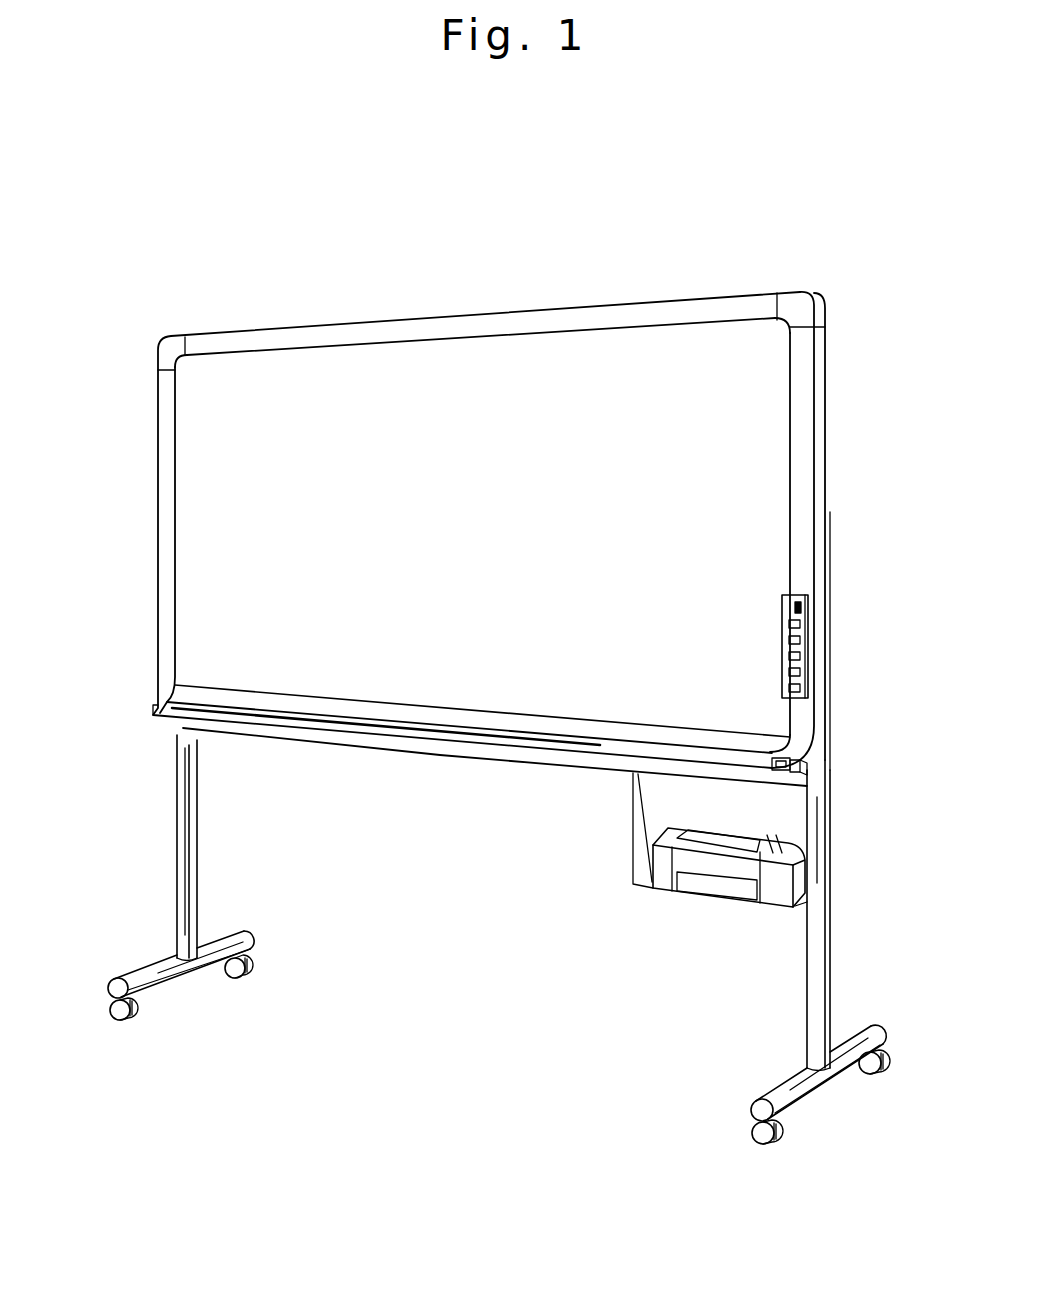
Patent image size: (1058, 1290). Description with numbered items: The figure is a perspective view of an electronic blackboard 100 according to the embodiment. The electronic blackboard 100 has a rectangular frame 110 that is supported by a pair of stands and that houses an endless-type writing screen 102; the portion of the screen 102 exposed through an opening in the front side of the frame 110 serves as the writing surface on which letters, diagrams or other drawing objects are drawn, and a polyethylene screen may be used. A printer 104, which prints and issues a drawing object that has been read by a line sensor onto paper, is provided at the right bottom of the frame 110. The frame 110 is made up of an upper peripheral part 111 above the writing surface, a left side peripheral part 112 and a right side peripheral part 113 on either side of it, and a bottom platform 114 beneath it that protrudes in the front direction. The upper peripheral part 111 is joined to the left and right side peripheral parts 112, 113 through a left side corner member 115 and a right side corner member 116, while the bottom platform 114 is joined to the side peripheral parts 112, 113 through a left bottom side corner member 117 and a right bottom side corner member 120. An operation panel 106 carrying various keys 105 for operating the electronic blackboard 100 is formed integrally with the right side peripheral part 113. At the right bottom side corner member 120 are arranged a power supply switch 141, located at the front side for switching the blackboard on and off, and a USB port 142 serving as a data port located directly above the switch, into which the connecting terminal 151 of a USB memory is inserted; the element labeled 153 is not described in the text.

The electronic blackboard 100 is at (656, 246).
The writing screen 102 is at (755, 432).
The printer 104 is at (800, 870).
The keys 105 is at (805, 663).
The operation panel 106 is at (805, 607).
The frame 110 is at (775, 292).
The upper peripheral part 111 is at (488, 326).
The left side peripheral part 112 is at (167, 487).
The right side peripheral part 113 is at (812, 382).
The bottom platform 114 is at (528, 738).
The left side corner member 115 is at (166, 346).
The right side corner member 116 is at (830, 299).
The left bottom side corner member 117 is at (168, 690).
The right bottom side corner member 120 is at (805, 757).
The power supply switch 141 is at (795, 773).
The USB port 142 is at (803, 766).
The connecting terminal 151 is at (683, 558).
The control panel 153 is at (690, 608).